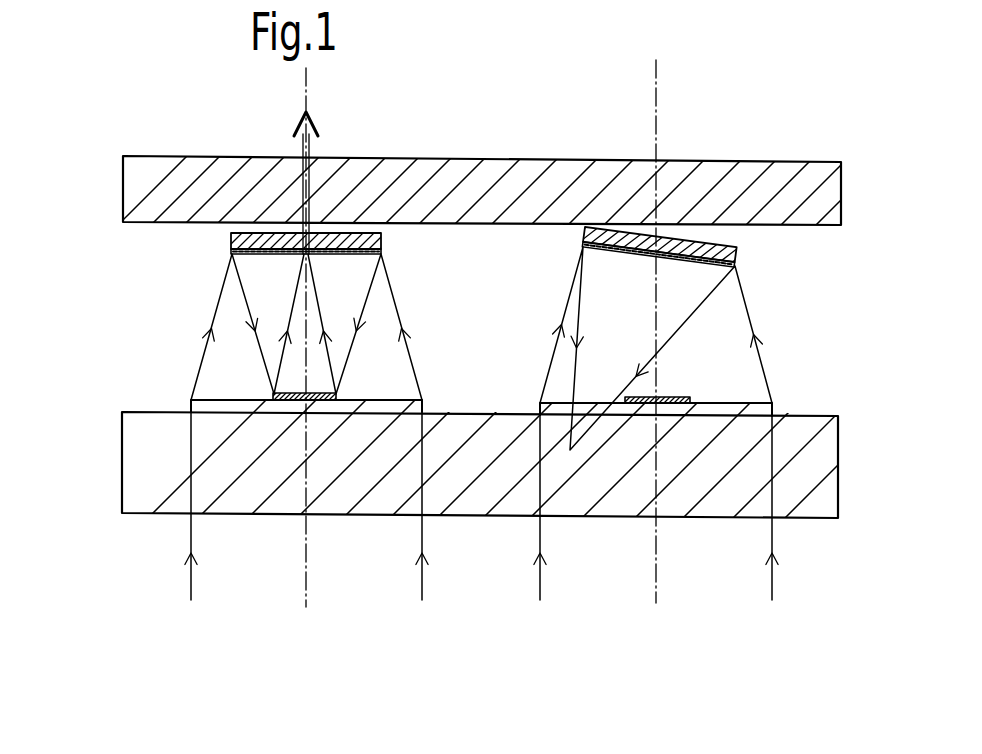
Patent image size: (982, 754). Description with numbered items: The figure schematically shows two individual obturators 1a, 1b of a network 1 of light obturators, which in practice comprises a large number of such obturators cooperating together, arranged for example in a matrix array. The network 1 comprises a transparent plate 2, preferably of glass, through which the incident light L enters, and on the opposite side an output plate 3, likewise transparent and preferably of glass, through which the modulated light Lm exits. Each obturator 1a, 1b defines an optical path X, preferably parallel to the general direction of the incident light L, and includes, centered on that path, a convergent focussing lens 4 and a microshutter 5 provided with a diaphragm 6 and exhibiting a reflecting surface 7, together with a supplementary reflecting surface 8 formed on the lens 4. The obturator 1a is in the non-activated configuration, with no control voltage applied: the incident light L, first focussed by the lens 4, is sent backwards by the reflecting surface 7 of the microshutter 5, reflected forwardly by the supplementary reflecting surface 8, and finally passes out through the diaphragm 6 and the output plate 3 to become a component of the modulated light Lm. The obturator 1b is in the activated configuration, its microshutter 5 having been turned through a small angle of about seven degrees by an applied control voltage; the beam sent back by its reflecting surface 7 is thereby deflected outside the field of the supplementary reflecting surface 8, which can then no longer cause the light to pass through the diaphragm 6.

The network 1 is at (113, 336).
The obturator 1a is at (422, 255).
The obturator 1b is at (782, 272).
The transparent plate 2 is at (808, 496).
The output plate 3 is at (562, 172).
The convergent focussing lens 4 is at (364, 402).
The microshutter 5 is at (388, 250).
The diaphragm 6 is at (303, 255).
The reflecting surface 7 is at (253, 262).
The supplementary reflecting surface 8 is at (287, 400).
The incident light L is at (219, 588).
The modulated light Lm is at (312, 142).
The optical path X is at (491, 333).